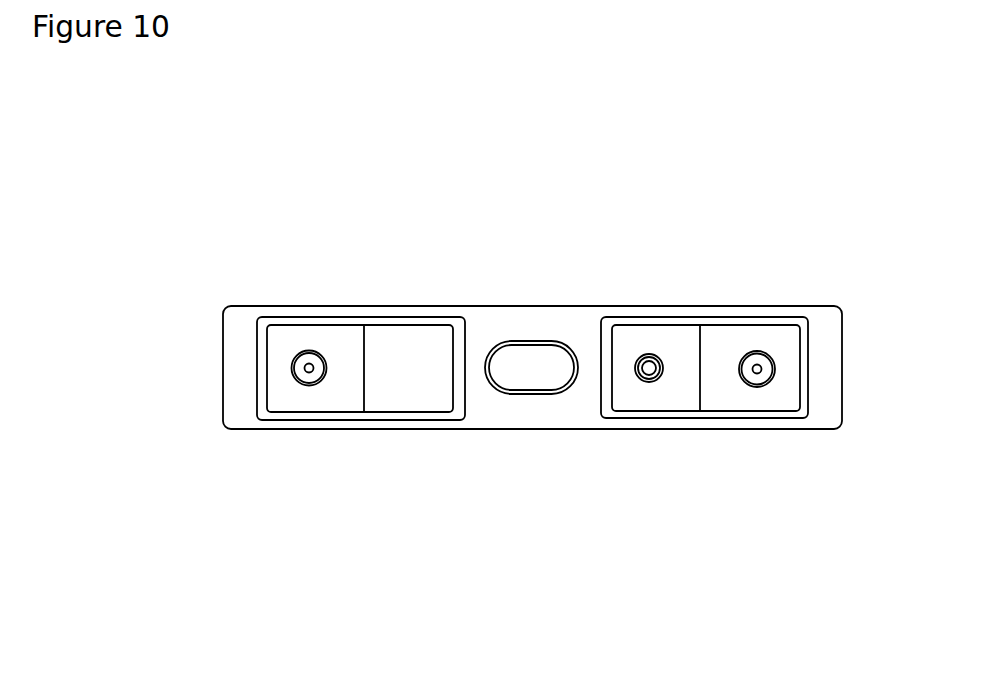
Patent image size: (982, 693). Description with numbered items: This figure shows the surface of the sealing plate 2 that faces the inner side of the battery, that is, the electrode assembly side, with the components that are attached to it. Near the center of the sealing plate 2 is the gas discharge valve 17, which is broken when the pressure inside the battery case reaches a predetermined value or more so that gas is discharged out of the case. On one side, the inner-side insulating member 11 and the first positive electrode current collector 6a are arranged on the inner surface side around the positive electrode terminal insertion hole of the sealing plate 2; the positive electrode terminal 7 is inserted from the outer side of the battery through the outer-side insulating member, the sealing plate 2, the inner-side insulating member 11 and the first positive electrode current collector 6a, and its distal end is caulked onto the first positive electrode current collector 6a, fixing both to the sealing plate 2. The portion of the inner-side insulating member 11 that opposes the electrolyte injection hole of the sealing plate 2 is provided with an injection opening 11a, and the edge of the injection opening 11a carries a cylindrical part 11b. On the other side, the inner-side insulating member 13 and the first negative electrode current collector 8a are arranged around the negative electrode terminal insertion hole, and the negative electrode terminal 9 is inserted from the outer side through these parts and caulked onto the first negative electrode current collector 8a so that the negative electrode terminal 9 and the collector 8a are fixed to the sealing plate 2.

The sealing plate 2 is at (529, 328).
The first negative electrode current collector 8a is at (288, 347).
The inner-side insulating member 13 is at (392, 372).
The negative electrode terminal 9 is at (298, 370).
The gas discharge valve 17 is at (538, 362).
The first positive electrode current collector 6a is at (776, 347).
The inner-side insulating member 11 is at (646, 345).
The cylindrical part 11b is at (635, 367).
The injection opening 11a is at (648, 383).
The positive electrode terminal 7 is at (765, 369).